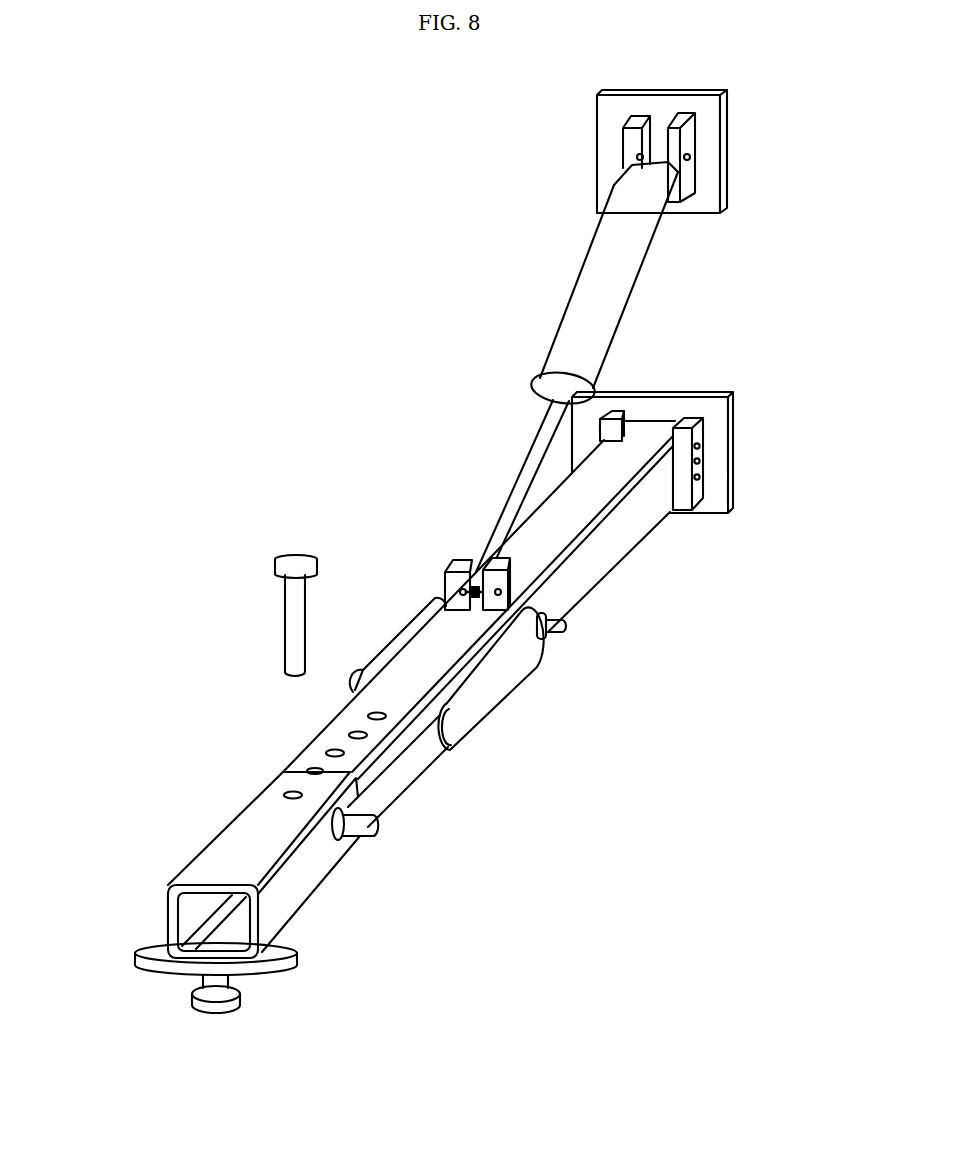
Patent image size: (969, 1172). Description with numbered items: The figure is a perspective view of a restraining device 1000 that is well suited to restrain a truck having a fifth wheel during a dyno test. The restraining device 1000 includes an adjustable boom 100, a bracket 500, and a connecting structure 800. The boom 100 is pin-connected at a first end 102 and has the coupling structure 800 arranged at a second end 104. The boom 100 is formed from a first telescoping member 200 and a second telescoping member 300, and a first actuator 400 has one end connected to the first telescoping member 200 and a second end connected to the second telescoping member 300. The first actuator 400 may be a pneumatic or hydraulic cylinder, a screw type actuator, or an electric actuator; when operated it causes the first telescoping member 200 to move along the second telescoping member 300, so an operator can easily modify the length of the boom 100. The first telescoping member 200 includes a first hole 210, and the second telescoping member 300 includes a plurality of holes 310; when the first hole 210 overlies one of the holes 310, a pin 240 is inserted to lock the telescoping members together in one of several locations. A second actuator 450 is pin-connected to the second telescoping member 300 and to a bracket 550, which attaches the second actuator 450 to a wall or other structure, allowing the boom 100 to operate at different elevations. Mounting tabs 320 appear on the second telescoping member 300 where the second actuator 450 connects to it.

The restraining device 1000 is at (168, 430).
The adjustable boom 100 is at (185, 533).
The first end 102 is at (180, 921).
The second end 104 is at (657, 364).
The first telescoping member 200 is at (231, 865).
The first hole 210 is at (290, 792).
The pin 240 is at (293, 616).
The second telescoping member 300 is at (460, 610).
The holes 310 is at (339, 686).
The mounting tabs 320 is at (452, 535).
The first actuator 400 is at (437, 598).
The second actuator 450 is at (580, 326).
The bracket 500 is at (760, 421).
The bracket 550 is at (760, 151).
The connecting structure 800 is at (210, 1013).